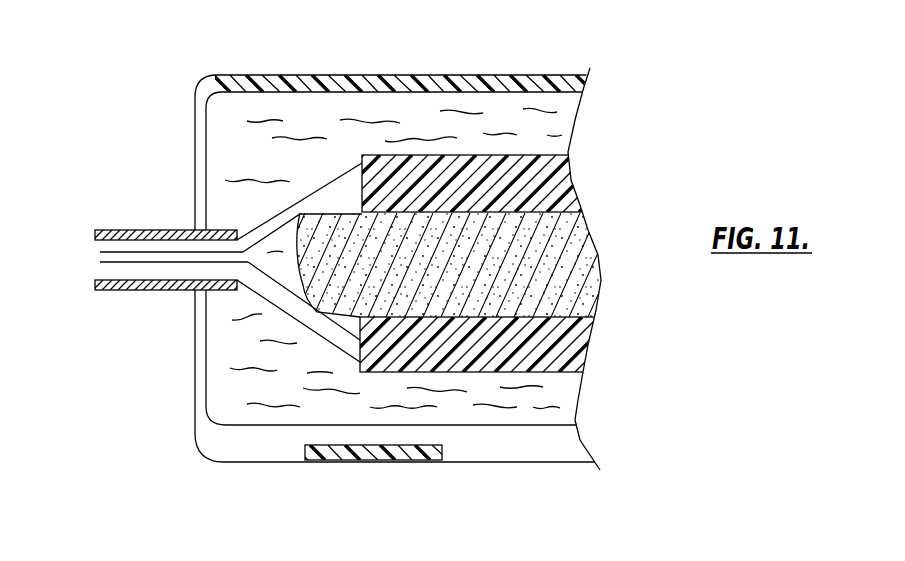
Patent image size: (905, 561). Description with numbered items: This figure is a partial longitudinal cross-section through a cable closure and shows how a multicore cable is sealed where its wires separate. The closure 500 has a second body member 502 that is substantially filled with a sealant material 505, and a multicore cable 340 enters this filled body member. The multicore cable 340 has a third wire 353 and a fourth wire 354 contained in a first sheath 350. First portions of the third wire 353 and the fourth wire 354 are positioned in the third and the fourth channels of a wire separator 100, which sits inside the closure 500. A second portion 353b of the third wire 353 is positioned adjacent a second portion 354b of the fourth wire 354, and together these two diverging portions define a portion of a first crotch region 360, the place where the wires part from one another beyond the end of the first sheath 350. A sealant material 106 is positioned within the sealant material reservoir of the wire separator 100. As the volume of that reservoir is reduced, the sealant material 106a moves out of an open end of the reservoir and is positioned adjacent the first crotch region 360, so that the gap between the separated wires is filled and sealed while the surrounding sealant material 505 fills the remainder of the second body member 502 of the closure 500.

The closure 500 is at (194, 97).
The second body member 502 is at (485, 462).
The sealant material 505 is at (268, 395).
The wire separator 100 is at (582, 188).
The sealant material 106 is at (563, 265).
The sealant material 106a is at (300, 283).
The multicore cable 340 is at (205, 266).
The first sheath 350 is at (133, 230).
The third wire 353 is at (98, 246).
The fourth wire 354 is at (100, 271).
The second portion of the third wire 353b is at (297, 217).
The second portion of the fourth wire 354b is at (295, 318).
The first crotch region 360 is at (260, 250).